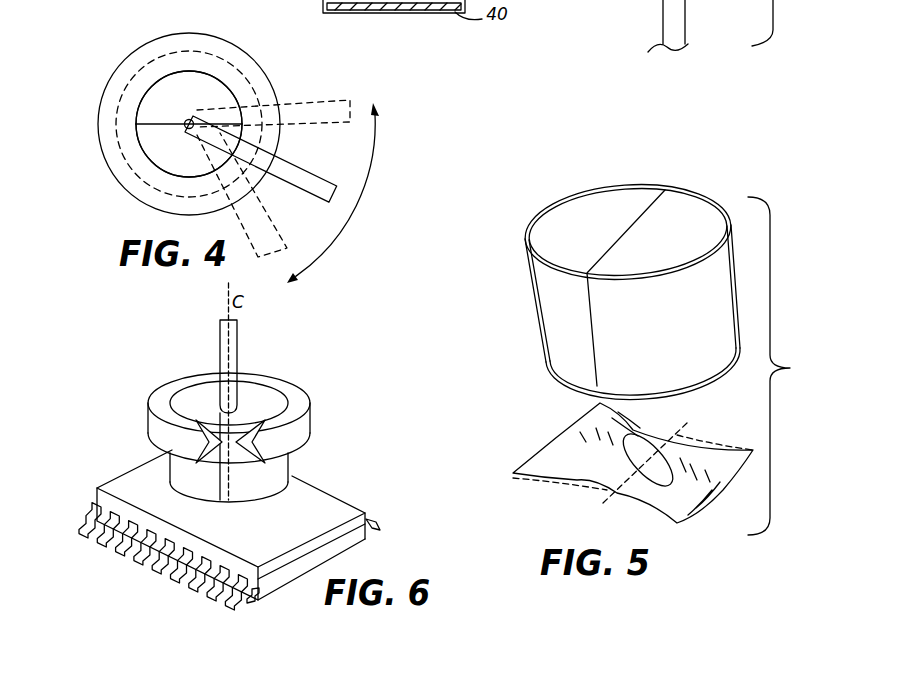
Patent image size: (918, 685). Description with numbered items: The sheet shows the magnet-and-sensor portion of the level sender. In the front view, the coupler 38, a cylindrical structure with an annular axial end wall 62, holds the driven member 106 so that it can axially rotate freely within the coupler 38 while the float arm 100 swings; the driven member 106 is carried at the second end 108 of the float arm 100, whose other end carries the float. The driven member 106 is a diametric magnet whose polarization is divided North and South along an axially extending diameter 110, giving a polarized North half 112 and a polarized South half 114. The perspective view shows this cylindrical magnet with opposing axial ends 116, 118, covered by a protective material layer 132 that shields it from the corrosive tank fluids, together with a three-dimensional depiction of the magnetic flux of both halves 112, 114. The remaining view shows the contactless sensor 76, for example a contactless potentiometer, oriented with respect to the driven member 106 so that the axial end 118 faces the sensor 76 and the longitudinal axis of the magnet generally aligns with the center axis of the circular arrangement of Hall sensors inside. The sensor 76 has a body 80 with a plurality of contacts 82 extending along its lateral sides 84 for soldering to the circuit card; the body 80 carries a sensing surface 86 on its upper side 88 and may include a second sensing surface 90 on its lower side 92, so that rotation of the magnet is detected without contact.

In FIG. 4, the coupler 38 is at (118, 54).
In FIG. 4, the axial end wall 62 is at (215, 46).
In FIG. 4, the driven member 106 is at (167, 45).
In FIG. 5, the driven member 106 is at (700, 232).
In FIG. 6, the driven member 106 is at (297, 451).
In FIG. 4, the second end 108 is at (186, 128).
In FIG. 6, the second end 108 is at (212, 395).
In FIG. 4, the axially extending diameter 110 is at (140, 118).
In FIG. 5, the axially extending diameter 110 is at (650, 200).
In FIG. 6, the axially extending diameter 110 is at (222, 466).
In FIG. 4, the polarized North half 112 is at (220, 97).
In FIG. 5, the polarized North half 112 is at (622, 198).
In FIG. 6, the polarized North half 112 is at (278, 410).
In FIG. 4, the polarized South half 114 is at (162, 160).
In FIG. 5, the polarized South half 114 is at (675, 205).
In FIG. 6, the polarized South half 114 is at (182, 410).
In FIG. 4, the axial end 116 is at (218, 88).
In FIG. 5, the axial end 116 is at (545, 227).
In FIG. 6, the axial end 116 is at (243, 395).
In FIG. 5, the axial end 118 is at (668, 383).
In FIG. 6, the axial end 118 is at (181, 503).
In FIG. 4, the float arm 100 is at (320, 178).
In FIG. 6, the float arm 100 is at (244, 342).
In FIG. 5, the protective material layer 132 is at (530, 295).
In FIG. 6, the contactless sensor 76 is at (97, 476).
In FIG. 6, the body 80 is at (322, 513).
In FIG. 6, the contacts 82 is at (158, 561).
In FIG. 6, the lateral sides 84 is at (374, 530).
In FIG. 6, the sensing surface 86 is at (271, 508).
In FIG. 6, the upper side 88 is at (285, 513).
In FIG. 6, the second sensing surface 90 is at (288, 582).
In FIG. 6, the lower side 92 is at (332, 556).